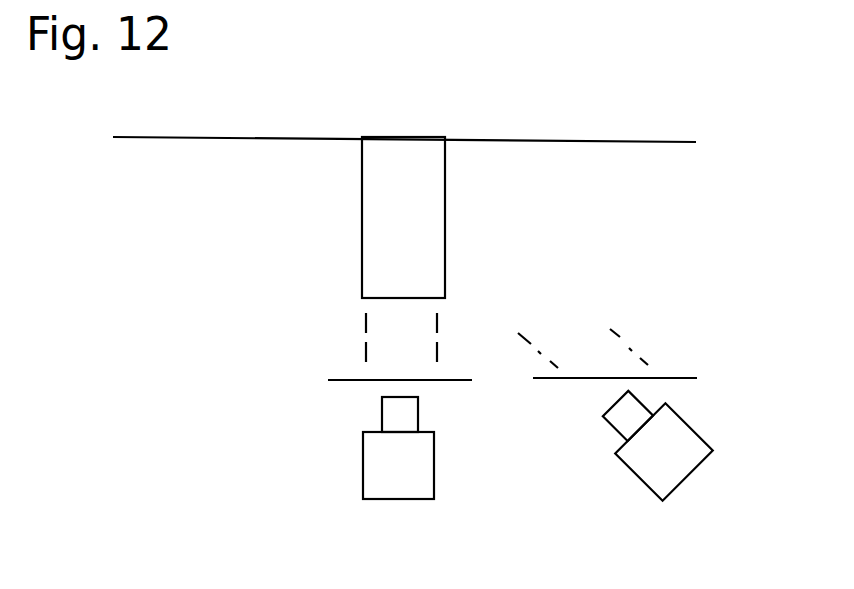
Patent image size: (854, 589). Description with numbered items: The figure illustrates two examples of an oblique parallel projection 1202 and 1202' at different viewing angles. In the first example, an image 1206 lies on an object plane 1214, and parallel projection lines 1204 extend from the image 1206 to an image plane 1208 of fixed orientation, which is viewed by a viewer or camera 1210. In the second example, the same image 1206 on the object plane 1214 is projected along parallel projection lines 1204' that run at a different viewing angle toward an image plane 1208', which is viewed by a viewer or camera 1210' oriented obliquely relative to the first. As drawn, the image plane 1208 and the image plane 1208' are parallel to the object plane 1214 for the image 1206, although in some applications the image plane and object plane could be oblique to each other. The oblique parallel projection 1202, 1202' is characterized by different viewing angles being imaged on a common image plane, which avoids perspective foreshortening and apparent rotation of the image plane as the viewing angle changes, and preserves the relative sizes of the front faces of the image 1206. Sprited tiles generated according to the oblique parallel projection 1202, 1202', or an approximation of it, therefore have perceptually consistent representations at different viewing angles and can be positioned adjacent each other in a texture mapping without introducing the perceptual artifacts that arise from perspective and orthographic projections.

The object plane 1214 is at (155, 138).
The image 1206 is at (370, 188).
The parallel projection lines 1204 is at (342, 328).
The image plane 1208 is at (425, 415).
The viewer or camera 1210 is at (398, 485).
The oblique parallel projection 1202 is at (259, 439).
The oblique parallel projection 1202' is at (760, 234).
The parallel projection lines 1204' is at (624, 342).
The image plane 1208' is at (667, 394).
The viewer or camera 1210' is at (657, 476).